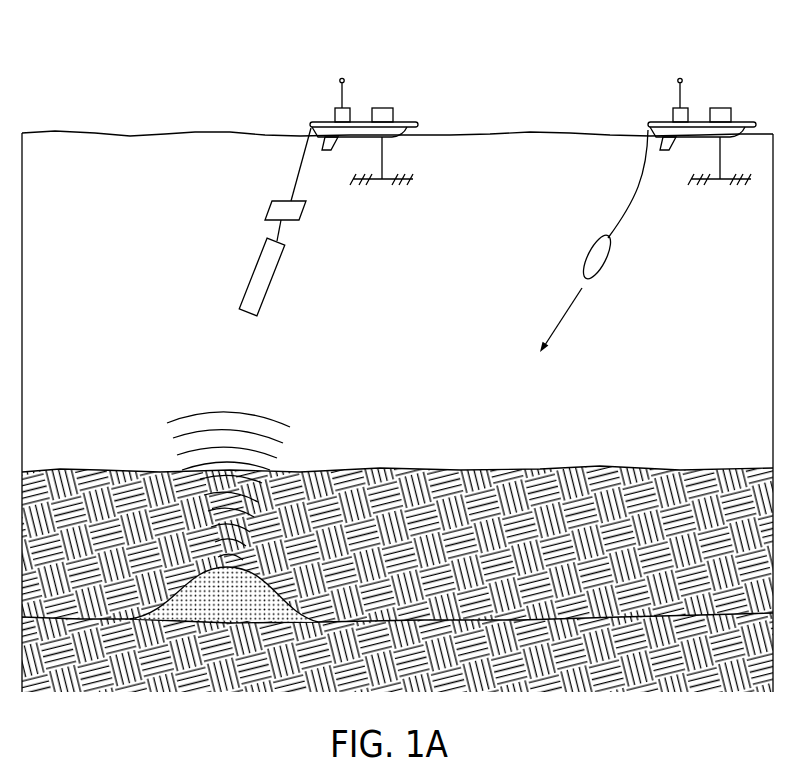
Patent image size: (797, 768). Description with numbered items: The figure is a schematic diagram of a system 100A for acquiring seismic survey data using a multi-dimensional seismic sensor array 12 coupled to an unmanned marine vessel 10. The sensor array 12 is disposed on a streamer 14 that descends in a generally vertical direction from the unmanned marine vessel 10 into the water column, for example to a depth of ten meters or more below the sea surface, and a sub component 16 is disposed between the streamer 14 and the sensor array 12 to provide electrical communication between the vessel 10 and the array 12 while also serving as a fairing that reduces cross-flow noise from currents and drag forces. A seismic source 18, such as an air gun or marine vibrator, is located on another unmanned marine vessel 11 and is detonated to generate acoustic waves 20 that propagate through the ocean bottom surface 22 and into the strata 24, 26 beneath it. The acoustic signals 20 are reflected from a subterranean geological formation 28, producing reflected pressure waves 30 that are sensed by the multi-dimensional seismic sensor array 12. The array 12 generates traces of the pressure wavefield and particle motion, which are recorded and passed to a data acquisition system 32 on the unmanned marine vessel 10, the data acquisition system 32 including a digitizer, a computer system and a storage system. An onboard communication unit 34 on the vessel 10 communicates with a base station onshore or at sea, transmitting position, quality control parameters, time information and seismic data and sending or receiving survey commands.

The system for acquiring seismic survey data 100A is at (140, 35).
The unmanned marine vessel 10 is at (371, 114).
The unmanned marine vessel 11 is at (745, 122).
The multi-dimensional seismic sensor array 12 is at (258, 283).
The streamer 14 is at (281, 229).
The sub component 16 is at (270, 207).
The seismic source 18 is at (588, 256).
The acoustic waves 20 is at (567, 310).
The ocean bottom surface 22 is at (553, 469).
The stratum 24 is at (382, 592).
The stratum 26 is at (413, 668).
The formation 28 is at (247, 608).
The pressure waves 30 is at (261, 397).
The data acquisition system 32 is at (383, 108).
The onboard communication unit 34 is at (341, 101).